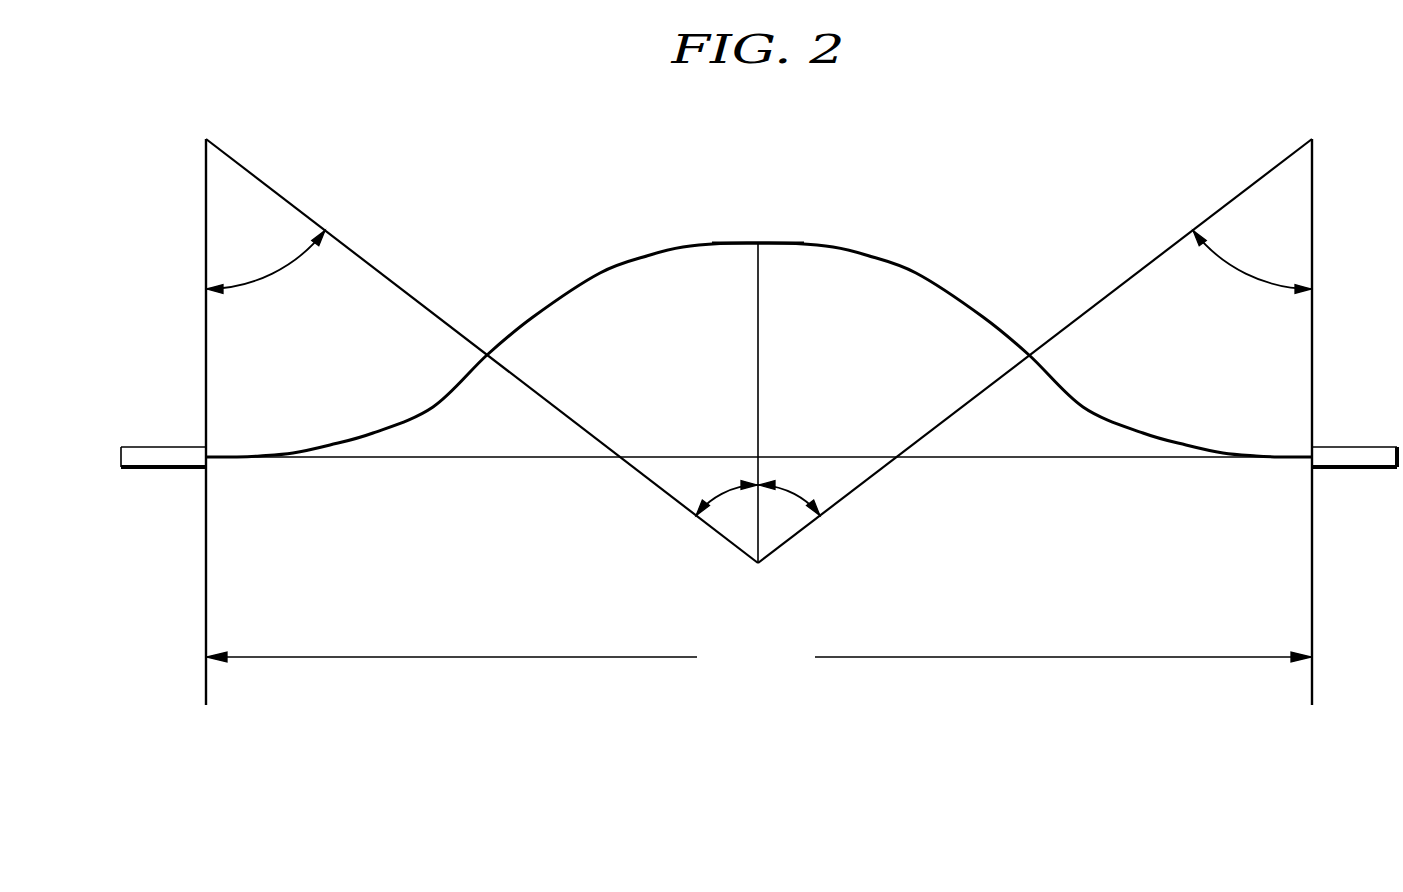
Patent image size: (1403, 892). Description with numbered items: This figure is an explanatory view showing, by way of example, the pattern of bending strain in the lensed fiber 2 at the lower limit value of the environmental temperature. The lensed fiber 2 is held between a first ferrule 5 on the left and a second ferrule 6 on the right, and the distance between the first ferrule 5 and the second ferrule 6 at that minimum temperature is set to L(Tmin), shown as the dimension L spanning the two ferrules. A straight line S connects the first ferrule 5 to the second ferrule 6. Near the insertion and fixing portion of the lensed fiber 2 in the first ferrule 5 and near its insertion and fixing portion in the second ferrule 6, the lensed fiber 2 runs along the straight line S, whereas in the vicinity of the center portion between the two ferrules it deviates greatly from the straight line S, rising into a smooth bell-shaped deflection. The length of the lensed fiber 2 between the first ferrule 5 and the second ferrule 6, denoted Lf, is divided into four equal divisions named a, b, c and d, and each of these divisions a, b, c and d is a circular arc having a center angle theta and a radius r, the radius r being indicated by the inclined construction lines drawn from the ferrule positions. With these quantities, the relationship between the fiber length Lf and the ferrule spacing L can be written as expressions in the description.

The lensed fiber 2 is at (759, 309).
The first ferrule 5 is at (150, 457).
The second ferrule 6 is at (1365, 457).
The first division a is at (373, 433).
The second division b is at (605, 268).
The third division c is at (943, 283).
The fourth division d is at (1110, 420).
The radius r is at (373, 265).
The straight line S is at (947, 462).
The length of the lensed fiber Lf is at (687, 243).
The distance between the first ferrule and the second ferrule L is at (759, 656).